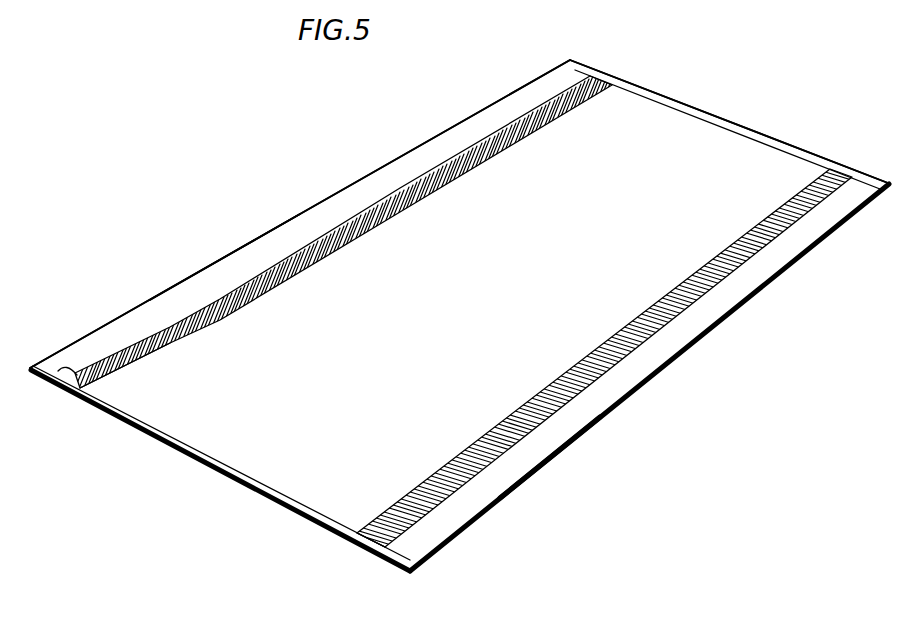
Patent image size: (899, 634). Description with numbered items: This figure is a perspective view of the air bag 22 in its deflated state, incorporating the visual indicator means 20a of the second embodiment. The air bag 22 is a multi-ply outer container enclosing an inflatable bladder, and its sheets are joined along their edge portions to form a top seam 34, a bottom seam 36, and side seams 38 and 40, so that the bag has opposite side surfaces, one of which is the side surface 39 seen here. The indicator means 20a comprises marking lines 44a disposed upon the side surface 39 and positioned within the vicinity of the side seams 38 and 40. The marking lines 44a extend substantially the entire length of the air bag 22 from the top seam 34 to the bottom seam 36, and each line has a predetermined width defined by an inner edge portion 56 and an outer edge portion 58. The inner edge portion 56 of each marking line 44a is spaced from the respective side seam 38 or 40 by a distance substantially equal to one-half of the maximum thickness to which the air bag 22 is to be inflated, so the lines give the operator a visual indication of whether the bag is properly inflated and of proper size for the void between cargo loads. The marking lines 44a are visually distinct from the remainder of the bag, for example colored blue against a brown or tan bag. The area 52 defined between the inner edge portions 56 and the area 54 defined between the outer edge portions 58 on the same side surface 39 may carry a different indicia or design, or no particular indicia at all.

The visual indicator means 20a is at (717, 288).
The air bag 22 is at (636, 114).
The top seam 34 is at (757, 130).
The bottom seam 36 is at (242, 487).
The side seam 38 is at (270, 229).
The side seam 40 is at (563, 456).
The side surface 39 is at (300, 455).
The marking lines 44a is at (380, 203).
The area between inner edge portions 52 is at (226, 275).
The area between outer edge portions 54 is at (226, 428).
The inner edge portion 56 is at (53, 383).
The outer edge portion 58 is at (118, 386).